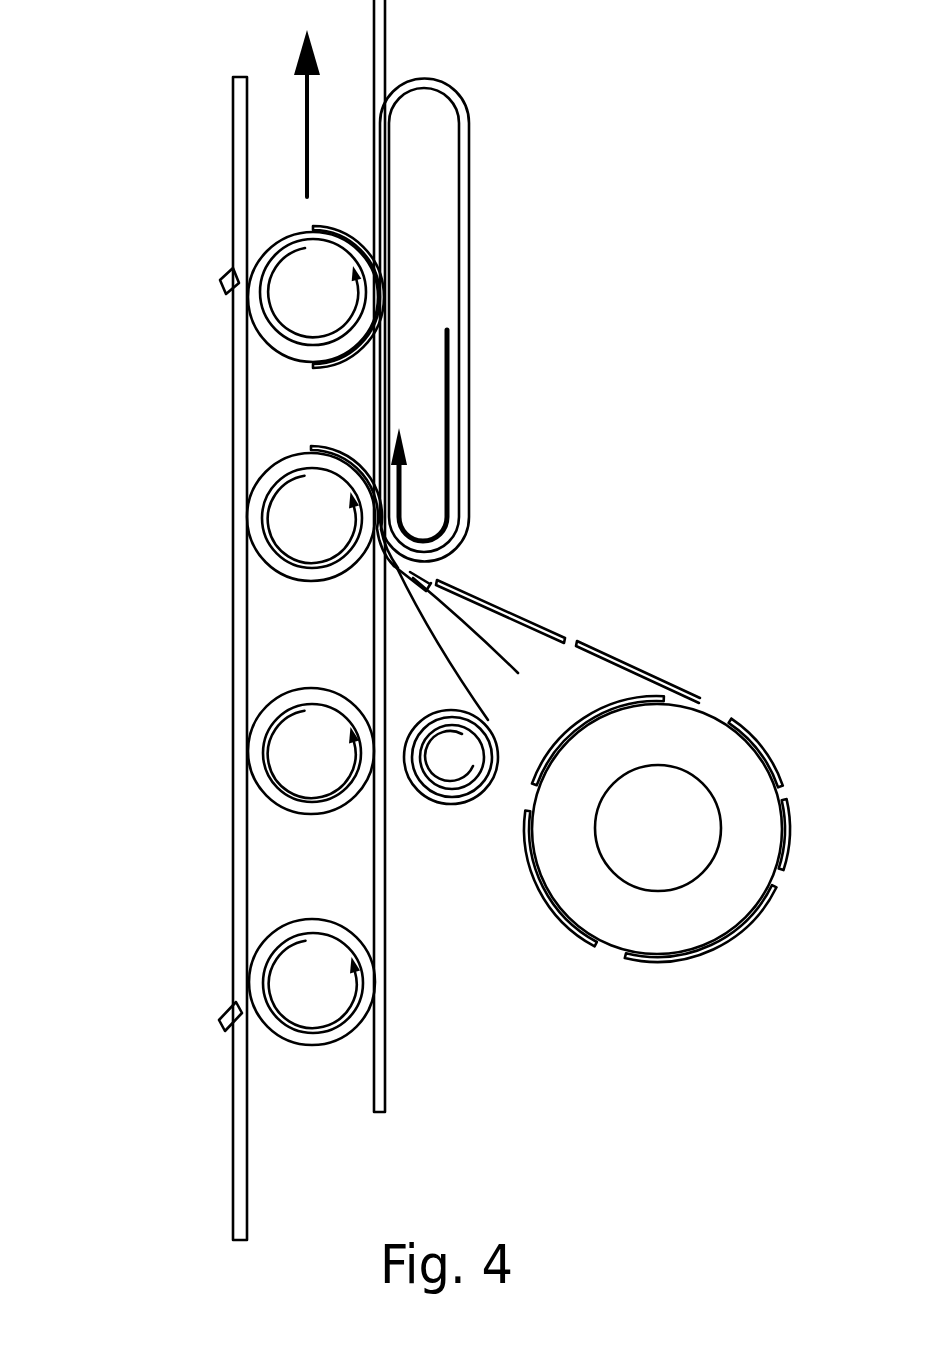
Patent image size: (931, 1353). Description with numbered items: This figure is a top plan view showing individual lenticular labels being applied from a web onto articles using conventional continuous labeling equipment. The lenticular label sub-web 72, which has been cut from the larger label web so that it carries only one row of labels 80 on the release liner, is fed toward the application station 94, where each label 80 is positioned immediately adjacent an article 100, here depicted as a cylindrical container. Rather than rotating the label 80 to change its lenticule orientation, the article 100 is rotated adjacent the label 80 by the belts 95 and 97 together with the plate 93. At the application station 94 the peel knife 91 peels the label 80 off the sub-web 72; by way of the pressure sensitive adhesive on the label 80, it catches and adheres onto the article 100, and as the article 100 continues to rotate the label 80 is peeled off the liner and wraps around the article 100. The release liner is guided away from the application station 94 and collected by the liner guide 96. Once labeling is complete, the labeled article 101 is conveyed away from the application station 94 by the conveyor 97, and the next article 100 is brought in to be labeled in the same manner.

The sub-web 72 is at (700, 638).
The lenticular label 80 is at (338, 230).
The peel knife 91 is at (469, 644).
The plate 93 is at (233, 630).
The application station 94 is at (458, 565).
The belt 95 is at (470, 180).
The liner guide 96 is at (460, 765).
The belt 97 is at (267, 140).
The article 100 is at (288, 572).
The labeled article 101 is at (293, 285).